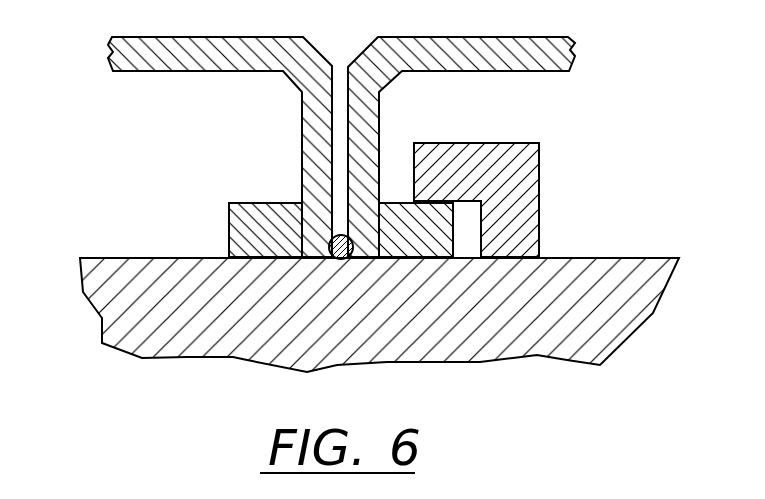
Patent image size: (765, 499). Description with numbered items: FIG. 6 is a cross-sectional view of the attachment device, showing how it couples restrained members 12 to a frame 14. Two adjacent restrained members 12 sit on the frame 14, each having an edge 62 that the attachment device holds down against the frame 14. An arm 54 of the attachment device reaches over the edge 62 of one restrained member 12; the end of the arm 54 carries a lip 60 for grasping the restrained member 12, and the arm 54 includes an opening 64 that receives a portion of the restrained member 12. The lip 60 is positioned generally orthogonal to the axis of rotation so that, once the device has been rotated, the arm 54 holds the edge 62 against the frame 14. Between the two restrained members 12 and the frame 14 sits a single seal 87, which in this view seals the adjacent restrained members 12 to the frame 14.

The restrained member 12 is at (157, 37).
The frame 14 is at (168, 337).
The arm 54 is at (539, 181).
The lip 60 is at (490, 143).
The edge 62 is at (228, 227).
The opening 64 is at (467, 228).
The seal 87 is at (330, 243).